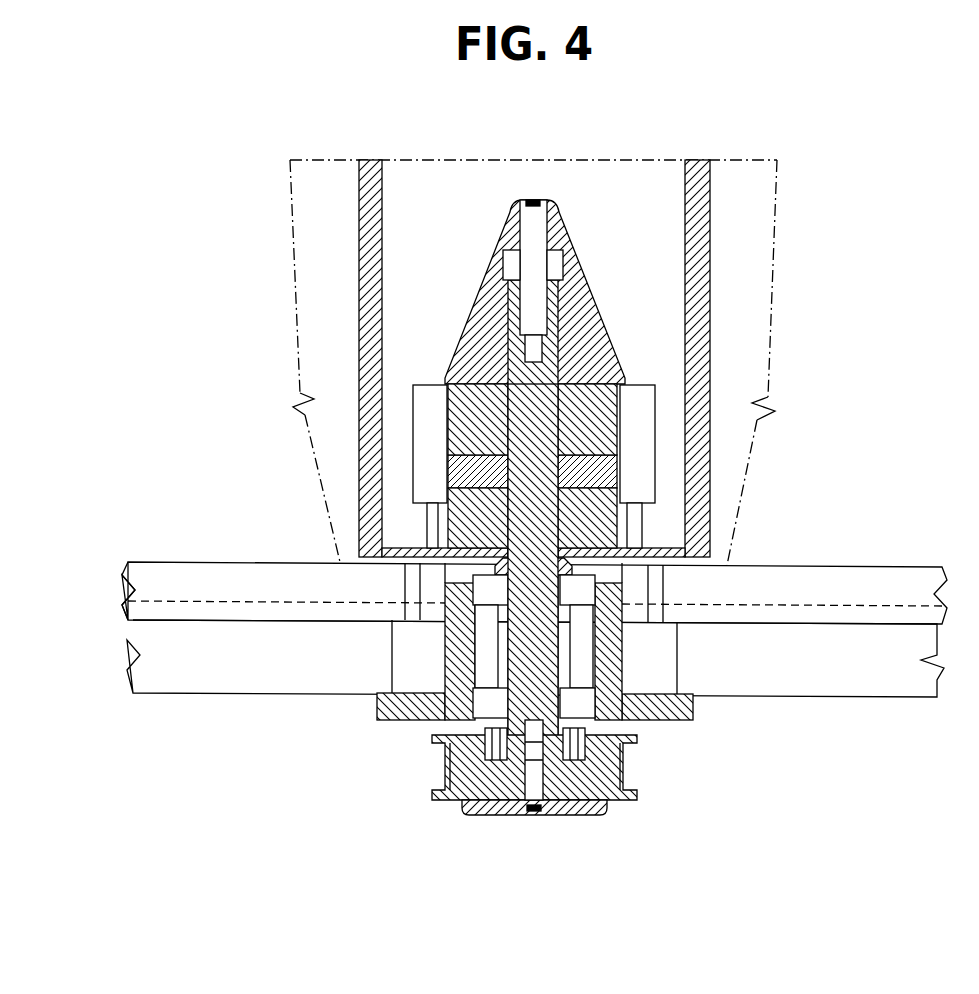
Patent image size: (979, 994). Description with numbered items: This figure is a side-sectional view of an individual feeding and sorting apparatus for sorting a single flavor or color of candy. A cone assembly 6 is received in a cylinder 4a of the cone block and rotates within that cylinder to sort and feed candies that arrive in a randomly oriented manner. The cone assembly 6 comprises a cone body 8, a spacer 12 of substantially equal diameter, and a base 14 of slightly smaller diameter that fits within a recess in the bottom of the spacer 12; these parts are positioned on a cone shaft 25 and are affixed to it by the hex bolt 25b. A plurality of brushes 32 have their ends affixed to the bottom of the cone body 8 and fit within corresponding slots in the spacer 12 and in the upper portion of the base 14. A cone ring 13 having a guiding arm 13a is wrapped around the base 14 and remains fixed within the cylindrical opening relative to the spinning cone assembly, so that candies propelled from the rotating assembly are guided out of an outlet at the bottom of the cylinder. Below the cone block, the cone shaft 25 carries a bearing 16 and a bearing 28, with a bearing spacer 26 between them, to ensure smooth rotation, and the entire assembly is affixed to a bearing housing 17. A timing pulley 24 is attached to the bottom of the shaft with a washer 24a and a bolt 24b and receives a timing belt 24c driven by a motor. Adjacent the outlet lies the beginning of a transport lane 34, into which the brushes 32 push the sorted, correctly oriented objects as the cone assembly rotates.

The cylinder 4a is at (367, 160).
The cone assembly 6 is at (457, 300).
The cone body 8 is at (593, 323).
The spacer 12 is at (612, 462).
The cone ring 13 is at (438, 523).
The guiding arm 13a is at (727, 491).
The base 14 is at (615, 525).
The bearing 16 is at (475, 573).
The bearing housing 17 is at (377, 720).
The timing pulley 24 is at (617, 800).
The washer 24a is at (470, 812).
The bolt 24b is at (517, 815).
The timing belt 24c is at (445, 767).
The cone shaft 25 is at (505, 216).
The hex bolt 25b is at (548, 202).
The bearing spacer 26 is at (500, 632).
The bearing 28 is at (490, 682).
The brushes 32 is at (655, 392).
The transport lane 34 is at (905, 572).